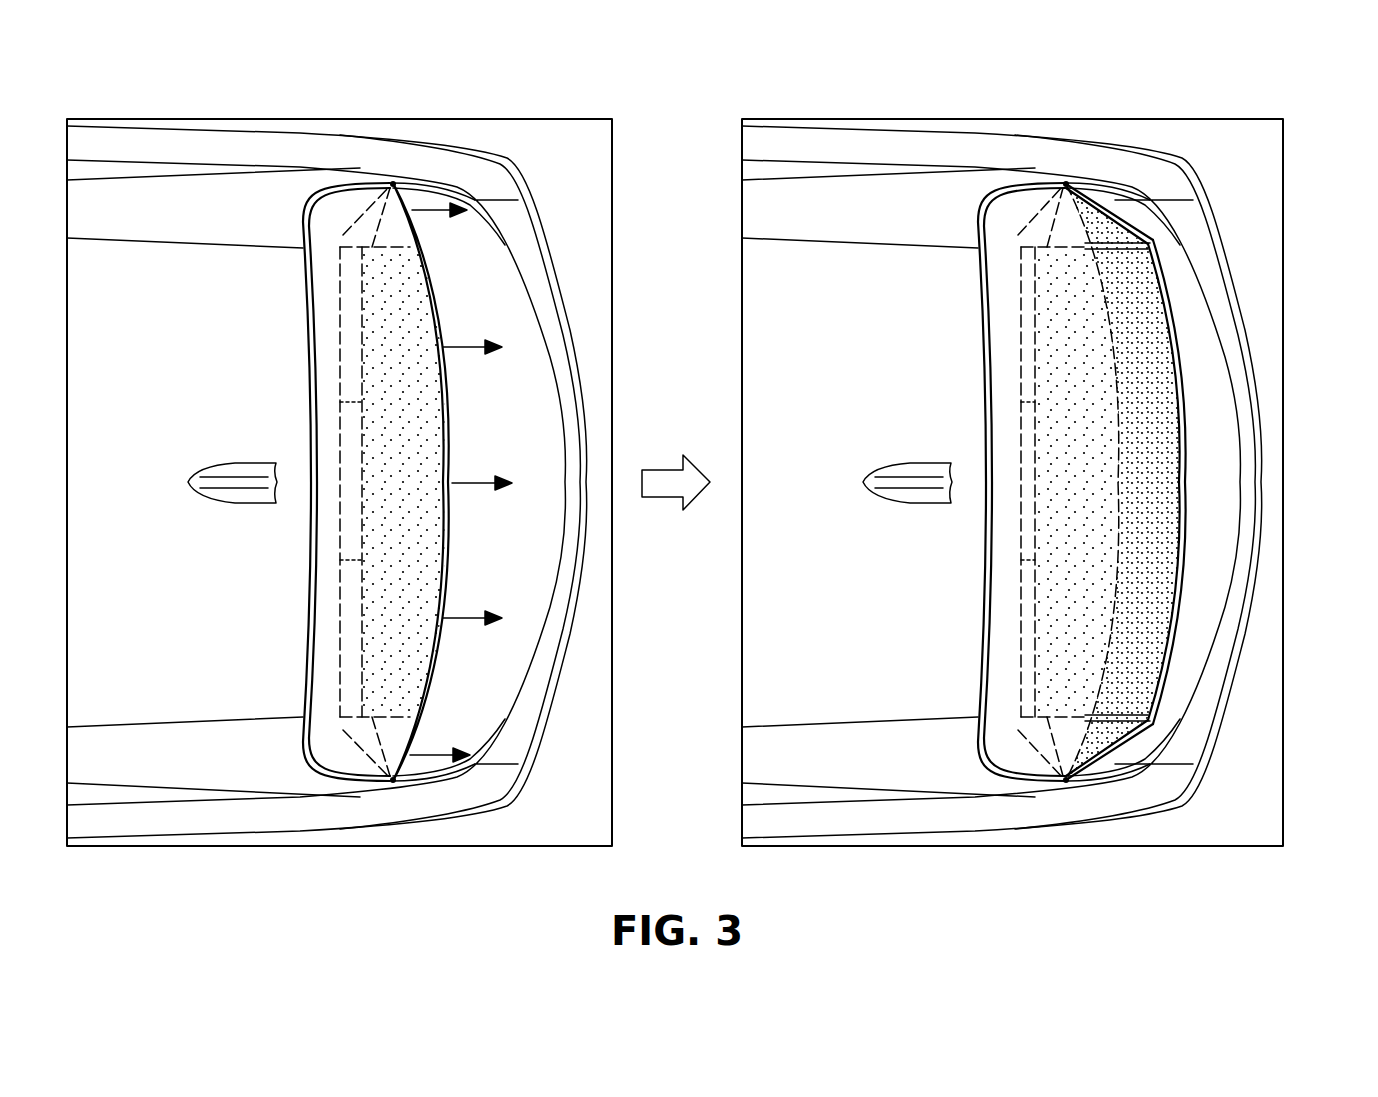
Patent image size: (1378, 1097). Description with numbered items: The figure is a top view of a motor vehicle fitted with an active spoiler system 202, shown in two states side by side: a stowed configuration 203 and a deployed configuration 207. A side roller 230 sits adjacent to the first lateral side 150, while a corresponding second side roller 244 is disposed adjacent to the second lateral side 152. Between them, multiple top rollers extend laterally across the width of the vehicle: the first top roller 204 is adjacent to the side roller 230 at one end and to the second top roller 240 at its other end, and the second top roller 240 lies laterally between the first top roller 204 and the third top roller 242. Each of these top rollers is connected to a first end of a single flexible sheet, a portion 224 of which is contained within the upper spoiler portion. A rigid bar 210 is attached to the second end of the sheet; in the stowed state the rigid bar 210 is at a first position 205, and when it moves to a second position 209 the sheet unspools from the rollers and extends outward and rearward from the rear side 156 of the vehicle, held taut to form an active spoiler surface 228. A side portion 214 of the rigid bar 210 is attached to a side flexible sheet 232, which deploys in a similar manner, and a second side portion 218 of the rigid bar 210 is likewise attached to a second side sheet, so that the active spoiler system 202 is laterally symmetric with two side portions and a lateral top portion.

The first lateral side 150 is at (283, 822).
The second lateral side 152 is at (283, 150).
The rear side 156 is at (557, 337).
The active spoiler system 202 is at (398, 158).
The stowed configuration 203 is at (545, 148).
The first top roller 204 is at (340, 628).
The first position 205 is at (418, 266).
The deployed configuration 207 is at (1218, 148).
The second position 209 is at (1163, 262).
The rigid bar 210 is at (445, 535).
The side portion 214 is at (1113, 764).
The second side portion 218 is at (1115, 218).
The portion of flexible sheet 224 is at (400, 635).
The active spoiler surface 228 is at (1153, 455).
The side roller 230 is at (343, 730).
The side flexible sheet 232 is at (1084, 768).
The second top roller 240 is at (340, 523).
The third top roller 242 is at (338, 338).
The second side roller 244 is at (343, 235).